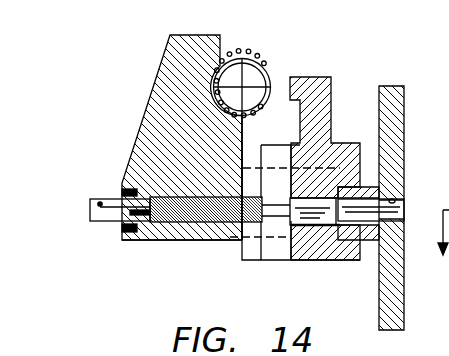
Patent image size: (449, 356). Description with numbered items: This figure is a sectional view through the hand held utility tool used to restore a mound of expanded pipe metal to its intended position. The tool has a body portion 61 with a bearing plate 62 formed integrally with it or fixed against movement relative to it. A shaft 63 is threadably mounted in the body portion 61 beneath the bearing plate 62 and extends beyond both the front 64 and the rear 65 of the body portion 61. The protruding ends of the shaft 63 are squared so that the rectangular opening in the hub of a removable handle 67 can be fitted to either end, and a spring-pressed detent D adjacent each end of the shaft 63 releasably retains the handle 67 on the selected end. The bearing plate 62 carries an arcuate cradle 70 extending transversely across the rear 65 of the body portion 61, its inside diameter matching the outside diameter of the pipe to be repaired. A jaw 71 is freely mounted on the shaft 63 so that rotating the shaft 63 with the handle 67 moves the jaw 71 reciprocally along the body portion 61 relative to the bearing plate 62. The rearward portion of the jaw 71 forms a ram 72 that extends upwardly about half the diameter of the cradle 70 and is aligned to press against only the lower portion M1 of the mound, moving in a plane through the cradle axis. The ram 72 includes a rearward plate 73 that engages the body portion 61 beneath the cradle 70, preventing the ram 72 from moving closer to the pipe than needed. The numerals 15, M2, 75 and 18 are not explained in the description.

The bearing plate 62 is at (163, 45).
The arcuate cradle 70 is at (213, 86).
The ball joint 15 is at (212, 98).
The rear 65 is at (122, 190).
The spring-pressed detent D is at (100, 203).
The shaft 63 is at (110, 217).
The body portion 61 is at (177, 240).
The rearward plate 73 is at (259, 261).
The front 64 is at (352, 242).
The second mark M2 is at (270, 70).
The lower portion of the mound M1 is at (271, 88).
The ram 72 is at (286, 90).
The jaw 71 is at (318, 77).
The removable handle 67 is at (400, 104).
The bushing 75 is at (256, 147).
The direction arrow 18 is at (442, 241).